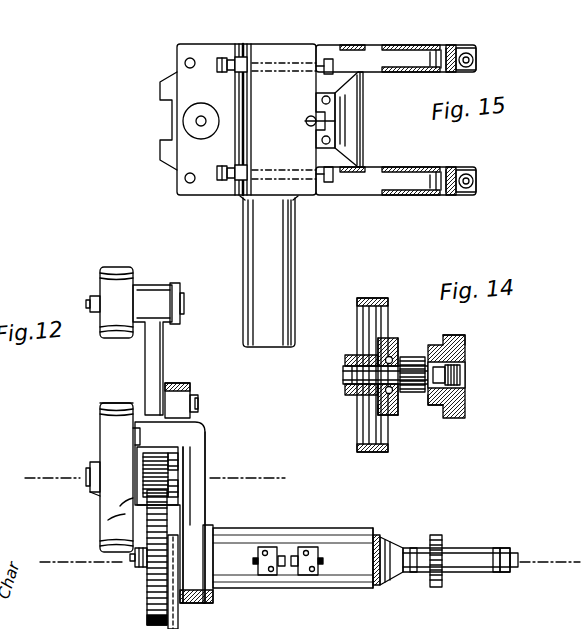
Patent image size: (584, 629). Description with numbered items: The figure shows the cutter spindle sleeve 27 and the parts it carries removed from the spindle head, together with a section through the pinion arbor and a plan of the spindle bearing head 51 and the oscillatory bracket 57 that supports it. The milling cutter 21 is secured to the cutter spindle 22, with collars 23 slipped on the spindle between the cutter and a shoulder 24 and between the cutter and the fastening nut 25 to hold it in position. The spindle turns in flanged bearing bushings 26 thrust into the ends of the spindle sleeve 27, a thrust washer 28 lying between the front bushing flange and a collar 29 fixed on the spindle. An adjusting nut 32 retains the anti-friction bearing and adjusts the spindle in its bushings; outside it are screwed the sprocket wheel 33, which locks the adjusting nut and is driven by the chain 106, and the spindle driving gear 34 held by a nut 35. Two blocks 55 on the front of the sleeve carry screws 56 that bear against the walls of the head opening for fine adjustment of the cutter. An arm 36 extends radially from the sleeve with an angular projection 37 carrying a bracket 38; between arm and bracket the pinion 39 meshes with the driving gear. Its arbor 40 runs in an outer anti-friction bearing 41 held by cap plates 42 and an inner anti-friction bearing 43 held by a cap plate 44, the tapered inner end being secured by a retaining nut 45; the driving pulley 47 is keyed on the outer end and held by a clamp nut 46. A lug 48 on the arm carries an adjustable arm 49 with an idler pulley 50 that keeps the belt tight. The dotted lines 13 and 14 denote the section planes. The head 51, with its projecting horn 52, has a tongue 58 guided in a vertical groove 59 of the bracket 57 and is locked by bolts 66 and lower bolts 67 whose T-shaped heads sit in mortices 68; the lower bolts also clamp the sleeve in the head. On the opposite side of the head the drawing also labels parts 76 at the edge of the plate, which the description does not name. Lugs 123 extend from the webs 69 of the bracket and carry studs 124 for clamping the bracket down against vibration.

In FIG. 15, the head 51 is at (249, 122).
In FIG. 15, the projecting horn 52 is at (269, 271).
In FIG. 15, the oscillatory bracket 57 is at (363, 94).
In FIG. 15, the tongue 58 is at (316, 108).
In FIG. 15, the vertical groove 59 is at (335, 121).
In FIG. 15, the bolts 66 is at (224, 58).
In FIG. 15, the lower bolts 67 is at (246, 57).
In FIG. 15, the mortices 68 is at (334, 63).
In FIG. 15, the webs 69 is at (396, 120).
In FIG. 15, the bracket 76 is at (162, 94).
In FIG. 15, the lugs 123 is at (479, 55).
In FIG. 15, the studs 124 is at (478, 63).
In FIG. 14, the arm 36 is at (466, 412).
In FIG. 12, the arm 36 is at (194, 517).
In FIG. 12, the angular projection 37 is at (173, 512).
In FIG. 14, the bracket 38 is at (393, 338).
In FIG. 12, the bracket 38 is at (123, 432).
In FIG. 14, the pinion 39 is at (413, 392).
In FIG. 12, the pinion 39 is at (178, 468).
In FIG. 14, the arbor 40 is at (343, 375).
In FIG. 12, the arbor 40 is at (88, 480).
In FIG. 14, the anti-friction bearing 41 is at (393, 415).
In FIG. 14, the cap plates 42 is at (378, 350).
In FIG. 12, the cap plates 42 is at (165, 453).
In FIG. 14, the anti-friction bearing 43 is at (453, 335).
In FIG. 14, the cap plate 44 is at (436, 405).
In FIG. 12, the cap plate 44 is at (178, 490).
In FIG. 14, the retaining nut 45 is at (466, 372).
In FIG. 14, the clamp nut 46 is at (347, 394).
In FIG. 12, the clamp nut 46 is at (97, 497).
In FIG. 14, the driving pulley 47 is at (357, 438).
In FIG. 12, the driving pulley 47 is at (116, 477).
In FIG. 12, the lug 48 is at (190, 388).
In FIG. 12, the arm 49 is at (163, 350).
In FIG. 12, the idler pulley 50 is at (109, 302).
In FIG. 12, the section line 13— 13 is at (64, 557).
In FIG. 12, the section line 14— 14 is at (48, 476).
In FIG. 12, the milling cutter 21 is at (438, 588).
In FIG. 12, the cutter spindle 22 is at (518, 566).
In FIG. 12, the collars 23 is at (497, 548).
In FIG. 12, the shoulder 24 is at (411, 548).
In FIG. 12, the fastening nut 25 is at (505, 573).
In FIG. 12, the bearing bushings 26 is at (377, 535).
In FIG. 12, the spindle sleeve 27 is at (347, 528).
In FIG. 12, the thrust washer 28 is at (377, 590).
In FIG. 12, the collar 29 is at (392, 540).
In FIG. 12, the adjusting nut 32 is at (209, 540).
In FIG. 12, the sprocket wheel 33 is at (147, 588).
In FIG. 12, the spindle driving gear 34 is at (147, 616).
In FIG. 12, the nut 35 is at (137, 566).
In FIG. 12, the blocks 55 is at (305, 547).
In FIG. 12, the screws 56 is at (294, 566).
In FIG. 12, the chain 106 is at (179, 619).